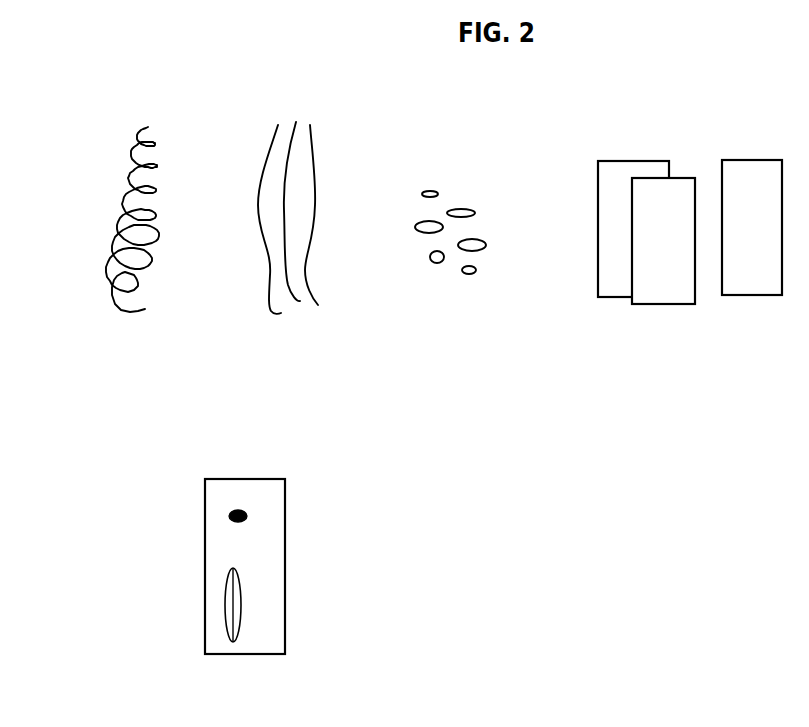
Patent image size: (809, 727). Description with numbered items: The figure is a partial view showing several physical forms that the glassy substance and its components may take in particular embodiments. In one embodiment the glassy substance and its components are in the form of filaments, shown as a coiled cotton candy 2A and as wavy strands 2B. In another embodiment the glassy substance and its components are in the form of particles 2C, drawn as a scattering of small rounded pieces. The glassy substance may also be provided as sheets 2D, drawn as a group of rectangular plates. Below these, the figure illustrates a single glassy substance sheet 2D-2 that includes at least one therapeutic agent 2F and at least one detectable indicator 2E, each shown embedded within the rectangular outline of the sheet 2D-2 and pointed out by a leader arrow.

The cotton candy 2A is at (130, 250).
The strands 2B is at (288, 244).
The particles 2C is at (450, 276).
The sheets 2D is at (690, 259).
The glassy substance sheet 2D-2 is at (307, 587).
The detectable indicator 2E is at (260, 516).
The therapeutic agent 2F is at (242, 605).